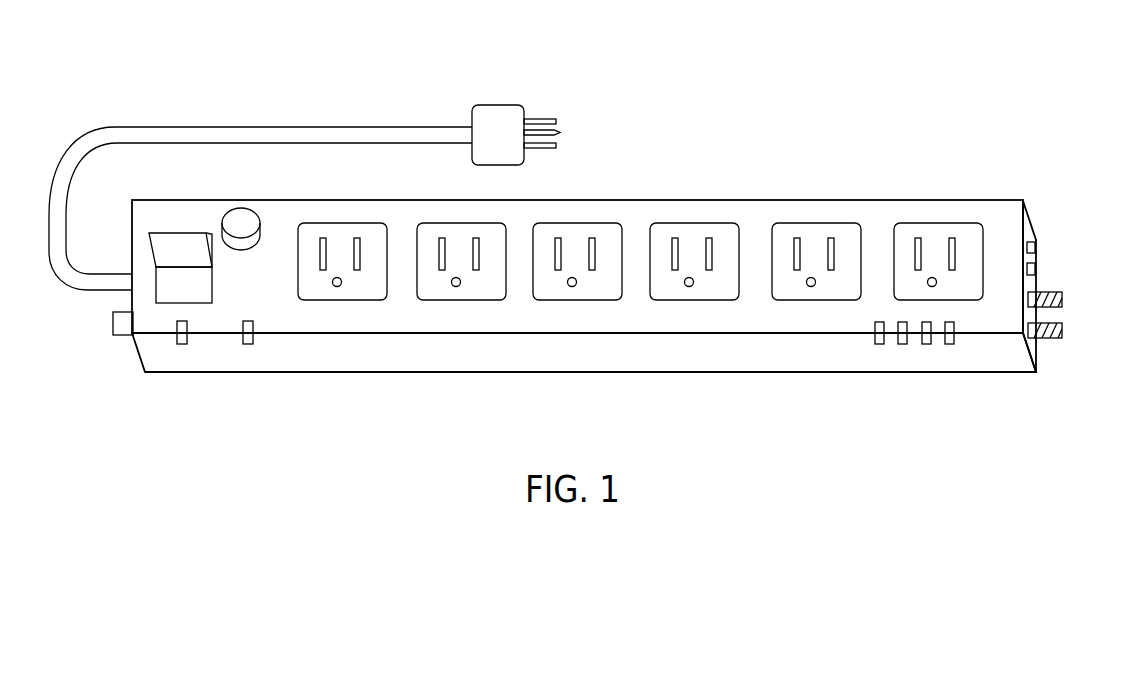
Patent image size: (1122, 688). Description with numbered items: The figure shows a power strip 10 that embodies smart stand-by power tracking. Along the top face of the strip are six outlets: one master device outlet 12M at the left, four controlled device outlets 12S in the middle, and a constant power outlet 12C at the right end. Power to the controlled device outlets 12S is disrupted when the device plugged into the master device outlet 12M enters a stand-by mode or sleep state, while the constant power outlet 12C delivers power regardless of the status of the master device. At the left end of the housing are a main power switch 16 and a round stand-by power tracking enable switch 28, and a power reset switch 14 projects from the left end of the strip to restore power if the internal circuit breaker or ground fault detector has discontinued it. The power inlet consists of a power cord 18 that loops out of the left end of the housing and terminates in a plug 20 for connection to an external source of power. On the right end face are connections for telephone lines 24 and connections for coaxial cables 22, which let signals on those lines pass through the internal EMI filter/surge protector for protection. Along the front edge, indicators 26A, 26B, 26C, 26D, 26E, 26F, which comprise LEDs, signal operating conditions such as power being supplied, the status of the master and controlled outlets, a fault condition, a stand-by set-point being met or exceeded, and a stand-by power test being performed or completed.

The power strip 10 is at (732, 130).
The master device outlet 12M is at (348, 296).
The controlled device outlet 12S is at (465, 296).
The constant power outlet 12C is at (963, 230).
The power reset switch 14 is at (117, 323).
The power switch 16 is at (177, 247).
The power cord 18 is at (190, 127).
The plug 20 is at (492, 110).
The connections for coaxial cables 22 is at (1062, 300).
The connections for telephone lines 24 is at (1035, 267).
The indicator 26A is at (178, 341).
The indicator 26B is at (246, 341).
The indicator 26C is at (875, 340).
The indicator 26D is at (905, 345).
The indicator 26E is at (925, 345).
The indicator 26F is at (953, 340).
The stand-by power tracking enable switch 28 is at (241, 210).